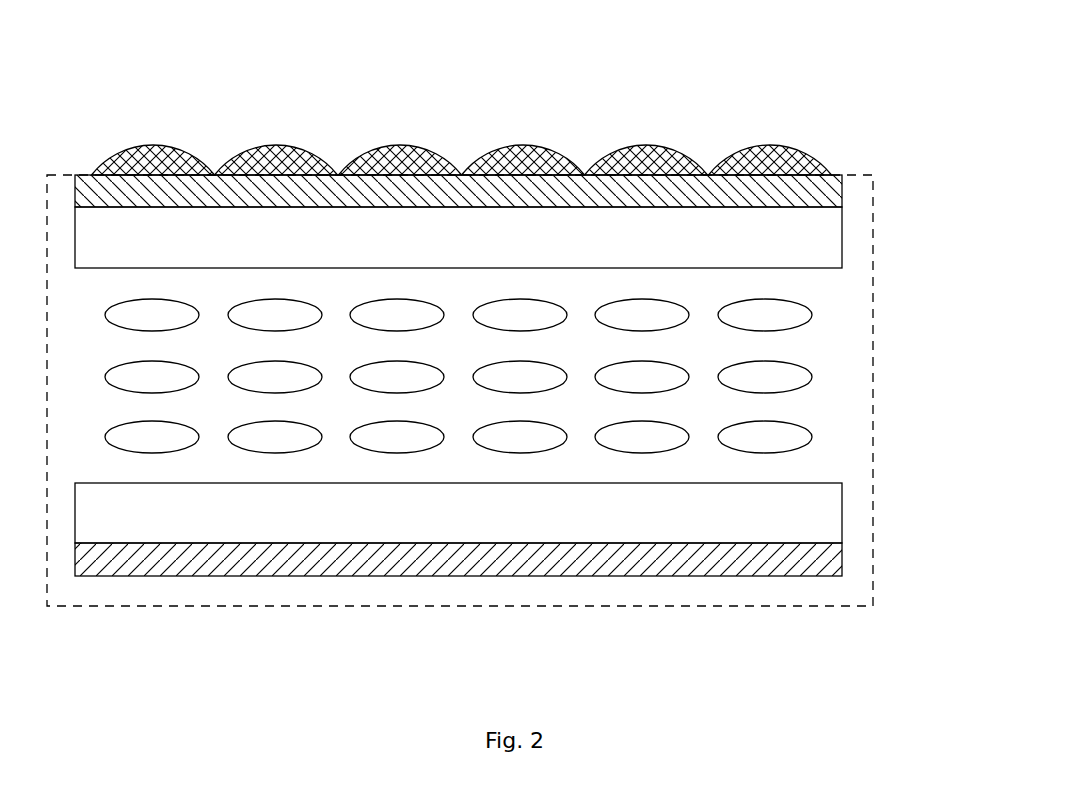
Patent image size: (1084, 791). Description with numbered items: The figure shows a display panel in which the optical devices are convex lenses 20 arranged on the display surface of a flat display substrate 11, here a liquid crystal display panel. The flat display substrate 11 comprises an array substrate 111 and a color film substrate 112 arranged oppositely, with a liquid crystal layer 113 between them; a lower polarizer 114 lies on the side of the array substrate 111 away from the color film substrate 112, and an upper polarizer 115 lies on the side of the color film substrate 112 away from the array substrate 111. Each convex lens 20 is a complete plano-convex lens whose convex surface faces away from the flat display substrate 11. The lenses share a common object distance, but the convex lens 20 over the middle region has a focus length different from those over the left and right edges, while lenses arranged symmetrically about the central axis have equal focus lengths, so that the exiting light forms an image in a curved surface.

The flat display substrate 11 is at (707, 606).
The array substrate 111 is at (157, 530).
The color film substrate 112 is at (628, 225).
The liquid crystal layer 113 is at (829, 392).
The lower polarizer 114 is at (352, 555).
The upper polarizer 115 is at (260, 187).
The convex lenses 20 is at (426, 160).